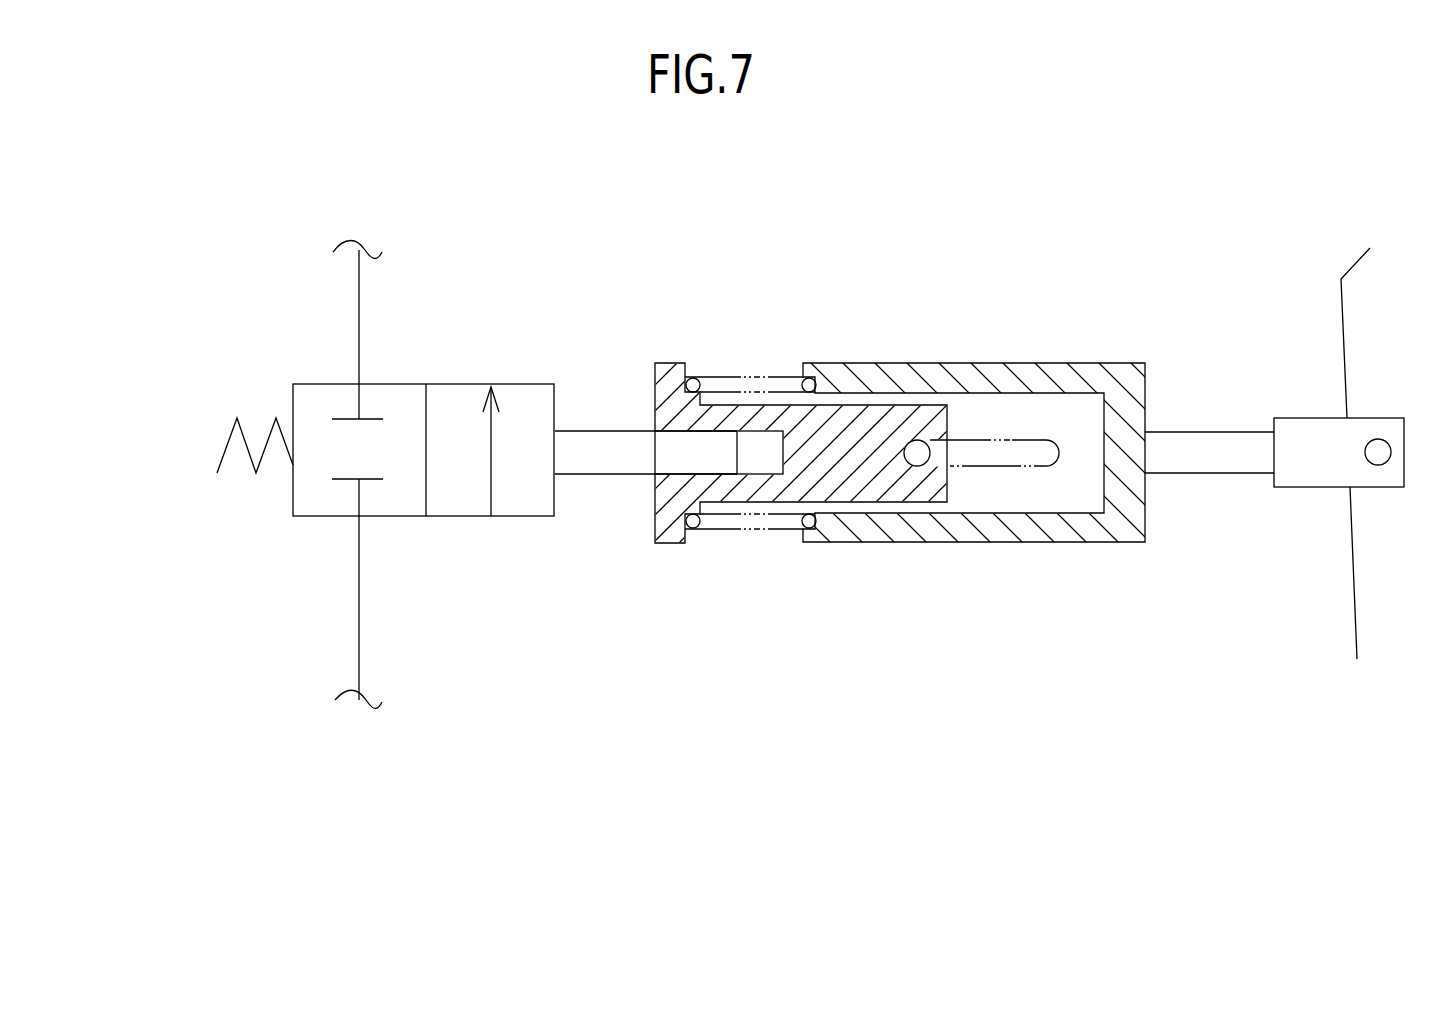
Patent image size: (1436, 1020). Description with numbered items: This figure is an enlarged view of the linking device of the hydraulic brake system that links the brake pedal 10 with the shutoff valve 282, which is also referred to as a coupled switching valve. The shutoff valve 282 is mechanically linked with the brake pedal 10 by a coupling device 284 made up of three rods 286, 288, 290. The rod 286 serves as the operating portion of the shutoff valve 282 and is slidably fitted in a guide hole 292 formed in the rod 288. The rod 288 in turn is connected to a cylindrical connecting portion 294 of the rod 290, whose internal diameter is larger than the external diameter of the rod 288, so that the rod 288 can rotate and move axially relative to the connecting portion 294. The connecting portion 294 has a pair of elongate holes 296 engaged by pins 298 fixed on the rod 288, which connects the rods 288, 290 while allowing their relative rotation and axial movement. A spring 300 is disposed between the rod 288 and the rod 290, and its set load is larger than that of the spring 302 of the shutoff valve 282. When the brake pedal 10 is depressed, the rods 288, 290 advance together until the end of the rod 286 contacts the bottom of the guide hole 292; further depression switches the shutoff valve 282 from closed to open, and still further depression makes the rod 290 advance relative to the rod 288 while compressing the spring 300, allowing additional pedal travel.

The brake pedal 10 is at (1353, 318).
The shutoff valve 282 is at (388, 384).
The coupling device 284 is at (1027, 675).
The rod 286 is at (605, 457).
The rod 288 is at (777, 490).
The rod 290 is at (1163, 547).
The guide hole 292 is at (772, 431).
The connecting portion 294 is at (1023, 533).
The elongate holes 296 is at (1015, 440).
The pins 298 is at (917, 440).
The spring 300 is at (693, 377).
The spring 302 is at (225, 434).